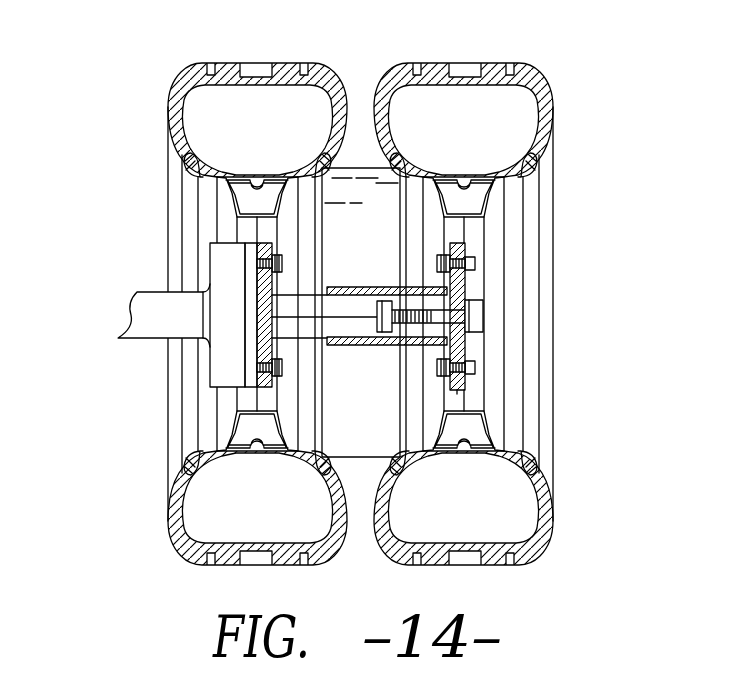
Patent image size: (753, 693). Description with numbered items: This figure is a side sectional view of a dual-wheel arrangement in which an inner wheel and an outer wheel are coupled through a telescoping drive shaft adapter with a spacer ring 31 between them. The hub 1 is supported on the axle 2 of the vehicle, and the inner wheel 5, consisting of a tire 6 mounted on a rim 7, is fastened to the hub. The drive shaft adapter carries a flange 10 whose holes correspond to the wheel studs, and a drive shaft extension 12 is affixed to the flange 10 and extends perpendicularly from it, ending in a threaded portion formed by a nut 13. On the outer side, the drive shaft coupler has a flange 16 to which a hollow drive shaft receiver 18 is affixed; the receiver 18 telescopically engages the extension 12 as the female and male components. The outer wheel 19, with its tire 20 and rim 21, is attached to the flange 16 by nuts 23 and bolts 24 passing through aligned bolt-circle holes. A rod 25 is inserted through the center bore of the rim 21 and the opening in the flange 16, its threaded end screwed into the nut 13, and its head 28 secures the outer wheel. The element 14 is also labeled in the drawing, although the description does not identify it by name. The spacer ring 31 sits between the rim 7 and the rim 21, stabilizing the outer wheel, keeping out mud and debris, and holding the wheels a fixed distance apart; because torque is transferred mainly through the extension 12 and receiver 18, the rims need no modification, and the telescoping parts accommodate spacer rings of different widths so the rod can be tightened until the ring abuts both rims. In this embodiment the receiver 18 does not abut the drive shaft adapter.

The hub 1 is at (227, 282).
The axle 2 is at (139, 344).
The inner wheel 5 is at (175, 82).
The tire 6 is at (167, 118).
The rim 7 is at (185, 171).
The flange 10 is at (255, 238).
The drive shaft extension 12 is at (308, 323).
The nut 13 is at (386, 321).
The wheel disc 14 is at (262, 362).
The flange 16 is at (468, 240).
The drive shaft receiver 18 is at (413, 335).
The outer wheel 19 is at (547, 82).
The tire 20 is at (553, 118).
The rim 21 is at (547, 181).
The nuts 23 is at (473, 408).
The bolts 24 is at (478, 373).
The rod 25 is at (481, 286).
The head 28 is at (478, 318).
The spacer ring 31 is at (356, 160).